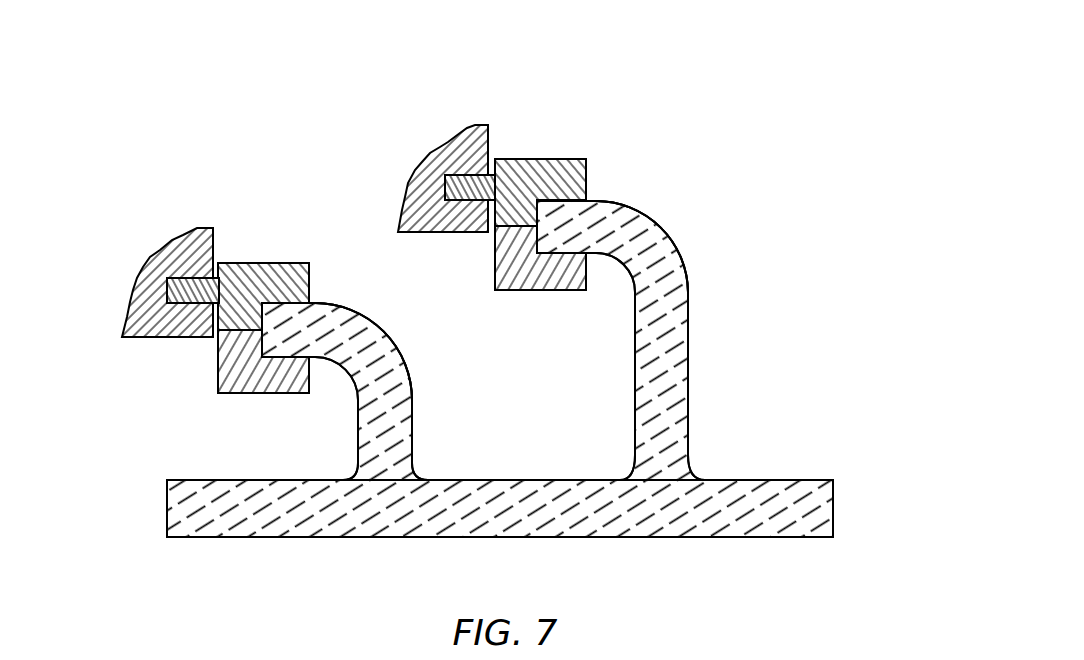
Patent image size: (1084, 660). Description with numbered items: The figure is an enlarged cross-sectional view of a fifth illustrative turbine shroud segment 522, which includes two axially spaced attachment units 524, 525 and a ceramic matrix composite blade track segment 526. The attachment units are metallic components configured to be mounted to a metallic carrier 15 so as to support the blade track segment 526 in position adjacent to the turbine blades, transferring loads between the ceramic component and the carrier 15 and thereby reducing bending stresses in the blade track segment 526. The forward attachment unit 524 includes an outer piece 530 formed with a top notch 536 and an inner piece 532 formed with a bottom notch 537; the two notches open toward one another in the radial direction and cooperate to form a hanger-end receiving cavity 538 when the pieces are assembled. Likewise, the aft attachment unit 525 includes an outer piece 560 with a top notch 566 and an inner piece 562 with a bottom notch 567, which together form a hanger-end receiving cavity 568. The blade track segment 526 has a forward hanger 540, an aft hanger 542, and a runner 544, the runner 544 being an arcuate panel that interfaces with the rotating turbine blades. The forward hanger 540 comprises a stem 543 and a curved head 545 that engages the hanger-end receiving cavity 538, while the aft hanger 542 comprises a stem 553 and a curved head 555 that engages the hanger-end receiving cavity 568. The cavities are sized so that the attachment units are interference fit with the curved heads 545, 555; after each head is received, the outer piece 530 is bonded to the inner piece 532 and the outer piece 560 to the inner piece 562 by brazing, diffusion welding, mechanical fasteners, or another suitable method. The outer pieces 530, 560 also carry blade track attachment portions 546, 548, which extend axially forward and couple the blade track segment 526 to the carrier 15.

The turbine shroud segment 522 is at (108, 104).
The carrier 15 is at (420, 138).
The attachment unit 524 is at (115, 268).
The attachment unit 525 is at (595, 120).
The ceramic matrix composite blade track segment 526 is at (900, 562).
The outer piece 530 is at (296, 322).
The inner piece 532 is at (265, 397).
The top notch 536 is at (272, 307).
The bottom notch 537 is at (244, 394).
The hanger-end receiving cavity 538 is at (275, 303).
The forward hanger 540 is at (447, 448).
The aft hanger 542 is at (696, 424).
The stem 543 is at (418, 408).
The runner 544 is at (837, 501).
The curved head 545 is at (366, 311).
The blade track attachment portion 546 is at (192, 308).
The blade track attachment portion 548 is at (464, 174).
The stem 553 is at (690, 354).
The curved head 555 is at (657, 226).
The outer piece 560 is at (583, 237).
The inner piece 562 is at (568, 294).
The top notch 566 is at (562, 200).
The bottom notch 567 is at (540, 293).
The hanger-end receiving cavity 568 is at (542, 190).